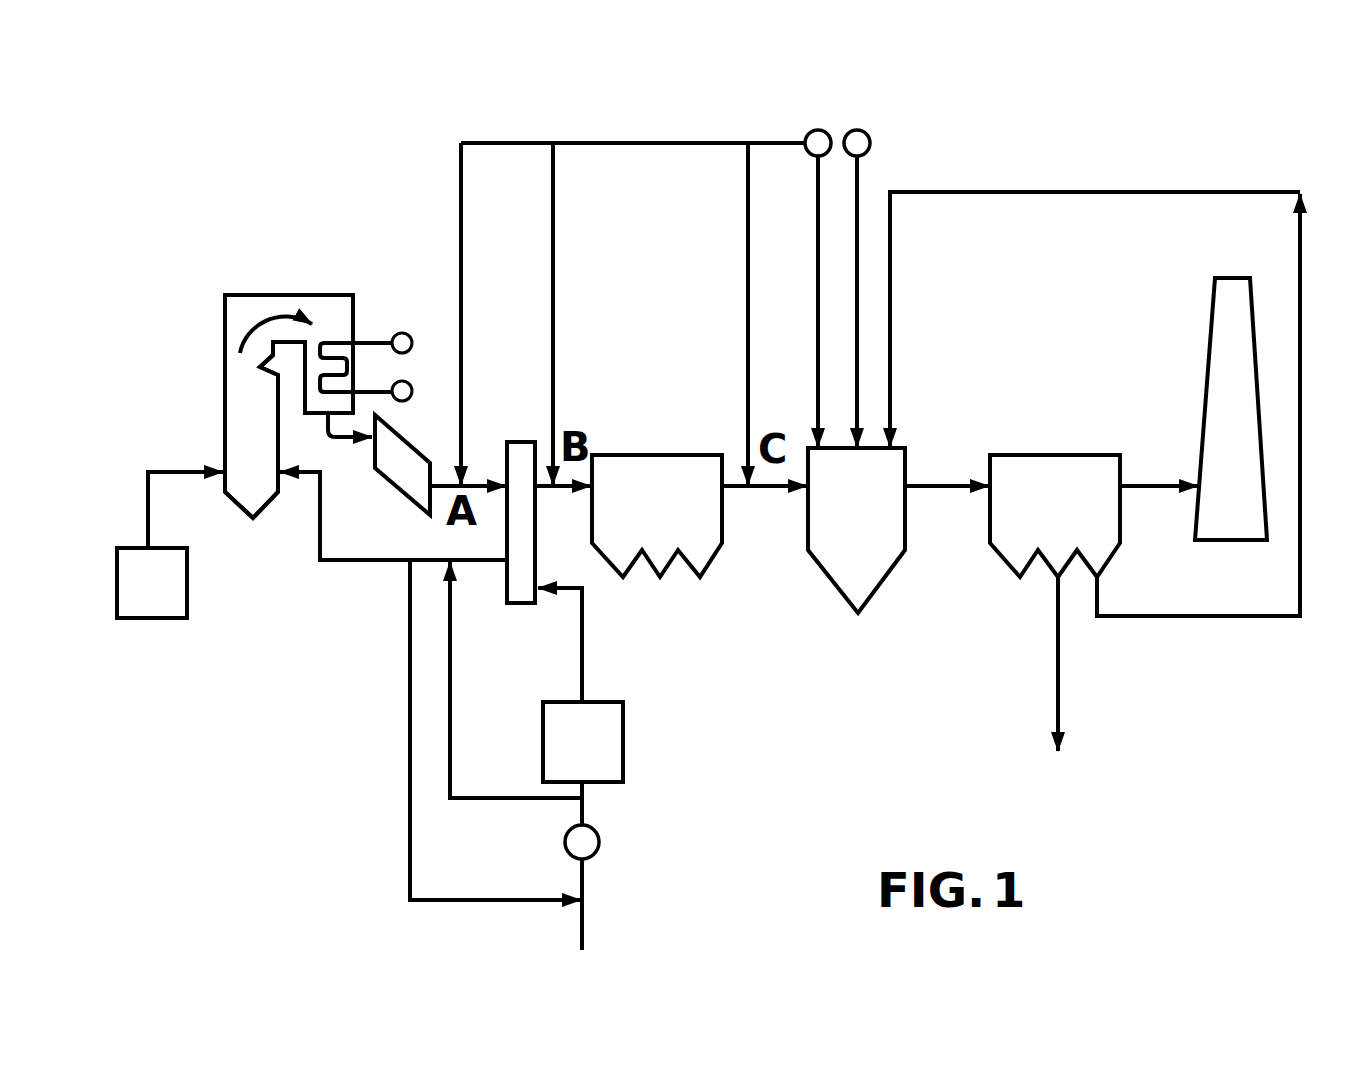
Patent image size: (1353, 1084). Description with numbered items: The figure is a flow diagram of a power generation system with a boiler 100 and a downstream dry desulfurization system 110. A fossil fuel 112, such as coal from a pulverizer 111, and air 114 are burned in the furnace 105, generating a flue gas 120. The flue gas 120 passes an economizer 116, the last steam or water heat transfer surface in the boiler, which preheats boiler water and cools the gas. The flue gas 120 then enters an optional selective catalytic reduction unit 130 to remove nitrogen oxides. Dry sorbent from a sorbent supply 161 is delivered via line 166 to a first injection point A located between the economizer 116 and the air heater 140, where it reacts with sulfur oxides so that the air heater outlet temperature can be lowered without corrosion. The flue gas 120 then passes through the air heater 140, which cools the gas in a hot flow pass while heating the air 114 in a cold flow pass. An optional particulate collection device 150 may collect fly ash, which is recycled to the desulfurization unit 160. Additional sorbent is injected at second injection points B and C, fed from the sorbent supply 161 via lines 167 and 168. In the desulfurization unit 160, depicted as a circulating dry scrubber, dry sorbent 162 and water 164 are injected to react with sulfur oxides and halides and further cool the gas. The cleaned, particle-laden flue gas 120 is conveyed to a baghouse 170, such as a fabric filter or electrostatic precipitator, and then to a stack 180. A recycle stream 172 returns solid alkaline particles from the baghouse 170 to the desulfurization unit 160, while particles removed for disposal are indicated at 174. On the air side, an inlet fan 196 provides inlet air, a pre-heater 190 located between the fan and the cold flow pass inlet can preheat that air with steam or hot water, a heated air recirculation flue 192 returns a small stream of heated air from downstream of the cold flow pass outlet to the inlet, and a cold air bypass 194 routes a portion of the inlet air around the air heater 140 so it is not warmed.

The boiler 100 is at (210, 272).
The furnace 105 is at (243, 392).
The desulfurization system 110 is at (620, 120).
The pulverizer 111 is at (133, 618).
The fossil fuel 112 is at (173, 472).
The air 114 is at (377, 560).
The economizer 116 is at (387, 343).
The flue gas 120 is at (257, 318).
The selective catalytic reduction (SCR) unit 130 is at (395, 458).
The air heater 140 is at (528, 450).
The particulate collection device 150 is at (684, 511).
The desulfurization unit 160 is at (878, 504).
The sorbent supply 161 is at (818, 145).
The dry sorbent 162 is at (818, 327).
The water 164 is at (857, 145).
The line 166 is at (461, 210).
The line 167 is at (553, 298).
The line 168 is at (748, 343).
The baghouse 170 is at (1081, 511).
The recycle stream 172 is at (1207, 192).
The particle disposal 174 is at (1058, 688).
The stack 180 is at (1254, 504).
The pre-heater 190 is at (604, 759).
The heated air recirculation flue 192 is at (408, 748).
The cold air bypass 194 is at (452, 703).
The inlet fan 196 is at (595, 825).